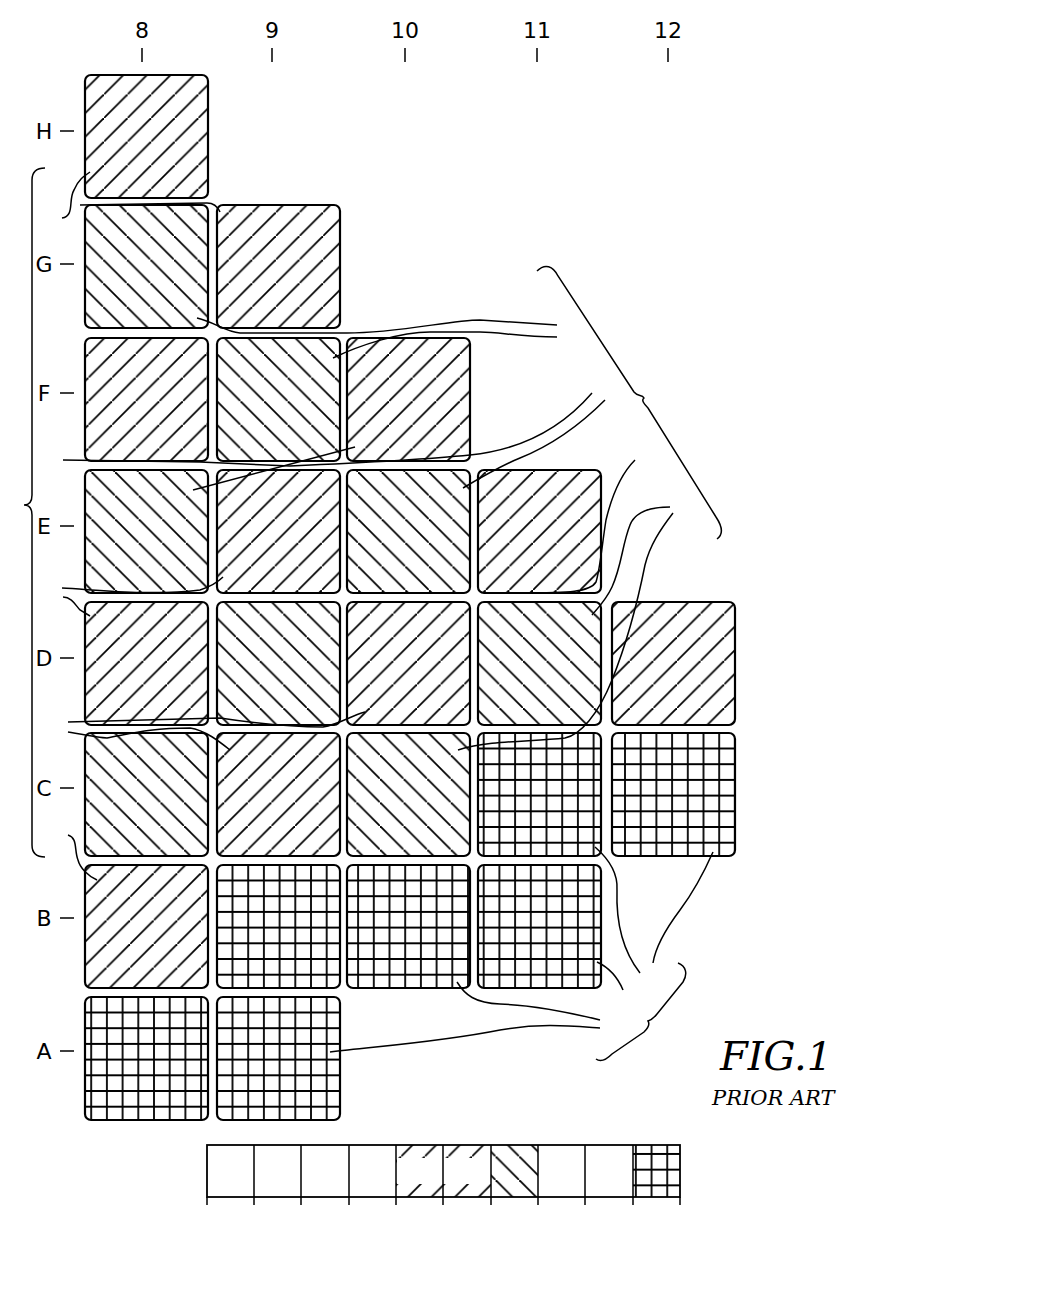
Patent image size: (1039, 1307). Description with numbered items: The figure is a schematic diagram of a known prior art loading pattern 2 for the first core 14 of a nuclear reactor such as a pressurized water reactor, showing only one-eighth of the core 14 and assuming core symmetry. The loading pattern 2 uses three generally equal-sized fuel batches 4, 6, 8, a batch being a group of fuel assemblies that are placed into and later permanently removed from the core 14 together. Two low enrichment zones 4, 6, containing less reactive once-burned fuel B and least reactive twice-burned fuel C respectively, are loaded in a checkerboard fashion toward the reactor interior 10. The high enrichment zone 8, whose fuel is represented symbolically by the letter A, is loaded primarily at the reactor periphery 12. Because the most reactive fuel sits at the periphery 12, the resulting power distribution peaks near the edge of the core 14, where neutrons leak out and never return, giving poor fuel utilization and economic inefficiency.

The loading pattern 2 is at (746, 443).
The low enrichment zone 4 is at (629, 402).
The low enrichment zone 6 is at (26, 512).
The high enrichment zone 8 is at (641, 1011).
The reactor interior 10 is at (82, 55).
The reactor periphery 12 is at (112, 1146).
The core 14 is at (295, 132).